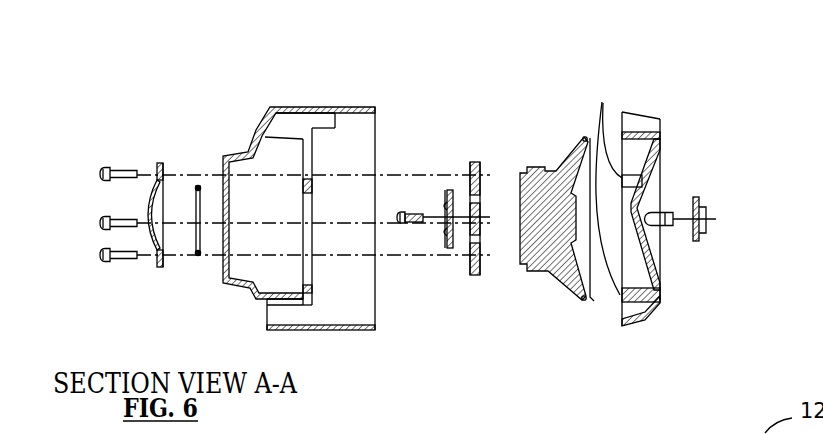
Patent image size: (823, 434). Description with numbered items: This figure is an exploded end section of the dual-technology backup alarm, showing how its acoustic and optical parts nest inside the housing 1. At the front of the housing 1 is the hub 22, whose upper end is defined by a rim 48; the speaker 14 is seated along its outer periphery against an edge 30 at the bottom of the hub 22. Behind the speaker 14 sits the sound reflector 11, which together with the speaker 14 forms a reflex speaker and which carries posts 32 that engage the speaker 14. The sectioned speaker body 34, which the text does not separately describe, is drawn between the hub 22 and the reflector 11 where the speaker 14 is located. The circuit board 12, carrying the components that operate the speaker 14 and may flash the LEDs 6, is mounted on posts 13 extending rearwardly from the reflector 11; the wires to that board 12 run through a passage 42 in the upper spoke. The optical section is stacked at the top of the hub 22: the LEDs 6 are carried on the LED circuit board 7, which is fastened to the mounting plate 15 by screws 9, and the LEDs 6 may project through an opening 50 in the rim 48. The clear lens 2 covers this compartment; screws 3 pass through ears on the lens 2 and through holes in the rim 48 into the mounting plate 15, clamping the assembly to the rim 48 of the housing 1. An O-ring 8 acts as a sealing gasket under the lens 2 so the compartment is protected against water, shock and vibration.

The housing 1 is at (237, 157).
The lens 2 is at (145, 200).
The screws 3 is at (101, 256).
The LEDs 6 is at (445, 205).
The LED circuit board 7 is at (448, 250).
The O-ring 8 is at (198, 185).
The screws 9 is at (409, 213).
The sound reflector 11 is at (660, 165).
The circuit board 12 is at (699, 236).
The posts 13 is at (660, 225).
The speaker 14 is at (533, 273).
The mounting plate 15 is at (475, 275).
The hub 22 is at (267, 301).
The edge 30 is at (310, 298).
The posts 32 is at (604, 98).
The diaphragm 34 is at (520, 205).
The passage 42 is at (290, 125).
The rim 48 is at (222, 267).
The opening 50 is at (225, 237).